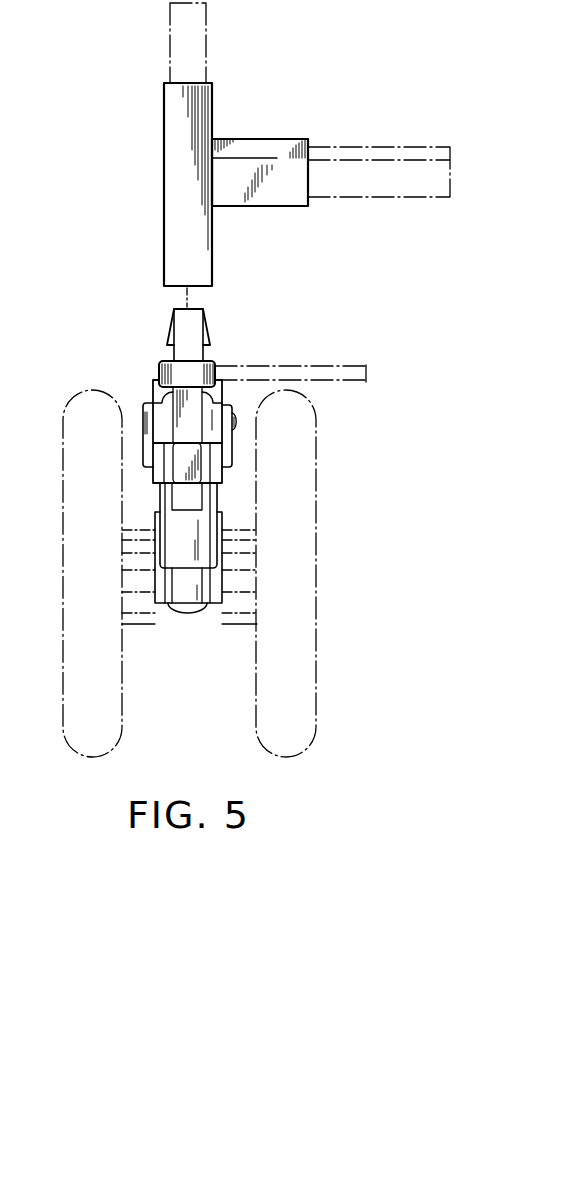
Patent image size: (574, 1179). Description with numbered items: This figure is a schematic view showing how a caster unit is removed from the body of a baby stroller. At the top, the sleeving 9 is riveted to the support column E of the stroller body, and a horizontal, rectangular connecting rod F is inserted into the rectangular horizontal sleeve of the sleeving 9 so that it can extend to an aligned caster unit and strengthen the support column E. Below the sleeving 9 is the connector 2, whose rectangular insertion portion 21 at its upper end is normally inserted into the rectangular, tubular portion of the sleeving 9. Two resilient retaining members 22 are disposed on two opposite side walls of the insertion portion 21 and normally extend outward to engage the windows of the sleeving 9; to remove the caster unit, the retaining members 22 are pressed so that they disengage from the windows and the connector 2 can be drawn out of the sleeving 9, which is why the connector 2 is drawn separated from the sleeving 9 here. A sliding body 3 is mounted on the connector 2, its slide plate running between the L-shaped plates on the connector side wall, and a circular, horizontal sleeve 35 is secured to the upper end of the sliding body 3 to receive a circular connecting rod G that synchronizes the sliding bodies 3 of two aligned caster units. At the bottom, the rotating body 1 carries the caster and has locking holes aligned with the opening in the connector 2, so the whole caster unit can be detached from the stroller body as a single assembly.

The rotating body 1 is at (178, 617).
The connector 2 is at (152, 392).
The sliding body 3 is at (153, 428).
The sleeving 9 is at (172, 217).
The insertion portion 21 is at (183, 333).
The resilient retaining members 22 is at (207, 327).
The horizontal sleeve 35 is at (222, 362).
The support column E is at (198, 33).
The connecting rod F is at (400, 155).
The rod G is at (327, 370).